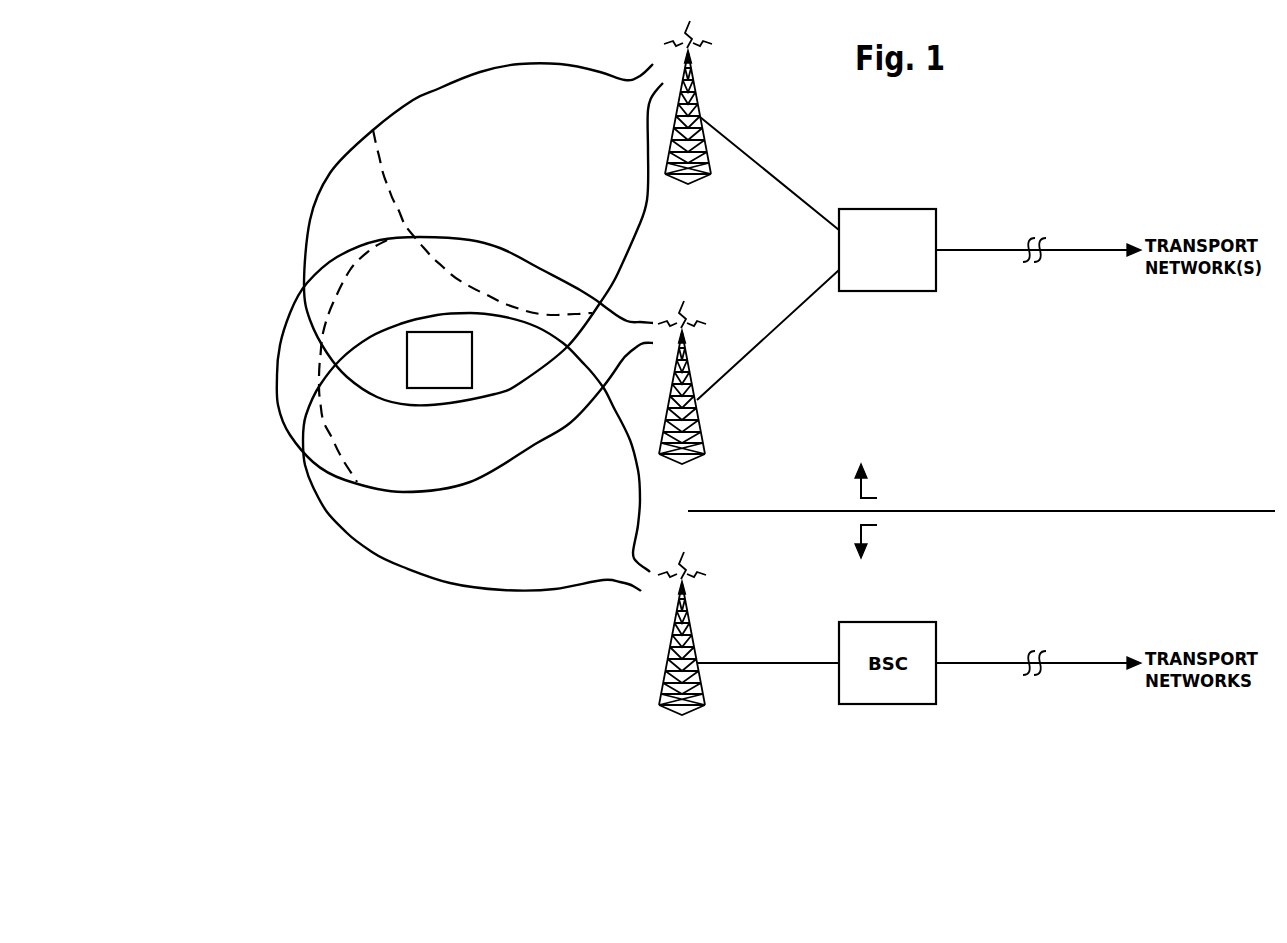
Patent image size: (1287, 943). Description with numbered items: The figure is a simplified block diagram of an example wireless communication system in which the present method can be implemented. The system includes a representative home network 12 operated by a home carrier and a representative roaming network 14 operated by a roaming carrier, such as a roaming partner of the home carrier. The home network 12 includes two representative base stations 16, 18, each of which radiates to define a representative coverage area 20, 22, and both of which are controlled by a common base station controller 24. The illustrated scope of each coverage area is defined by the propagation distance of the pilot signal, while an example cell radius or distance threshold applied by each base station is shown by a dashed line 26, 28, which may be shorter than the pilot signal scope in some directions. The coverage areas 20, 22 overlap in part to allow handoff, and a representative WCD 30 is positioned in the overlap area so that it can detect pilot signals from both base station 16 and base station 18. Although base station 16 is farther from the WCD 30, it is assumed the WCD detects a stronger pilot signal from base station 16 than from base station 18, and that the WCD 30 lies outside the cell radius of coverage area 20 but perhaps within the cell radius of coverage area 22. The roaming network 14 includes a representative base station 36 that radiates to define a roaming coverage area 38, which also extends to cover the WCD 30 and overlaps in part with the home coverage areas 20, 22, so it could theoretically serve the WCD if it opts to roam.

The home network 12 is at (981, 487).
The roaming network 14 is at (972, 537).
The base station 16 is at (699, 103).
The base station 18 is at (698, 415).
The coverage area 20 is at (413, 100).
The coverage area 22 is at (623, 368).
The base station controller 24 is at (902, 209).
The dashed line 26 is at (393, 196).
The dashed line 28 is at (334, 434).
The WCD 30 is at (472, 345).
The base station 36 is at (667, 655).
The coverage area 38 is at (430, 577).